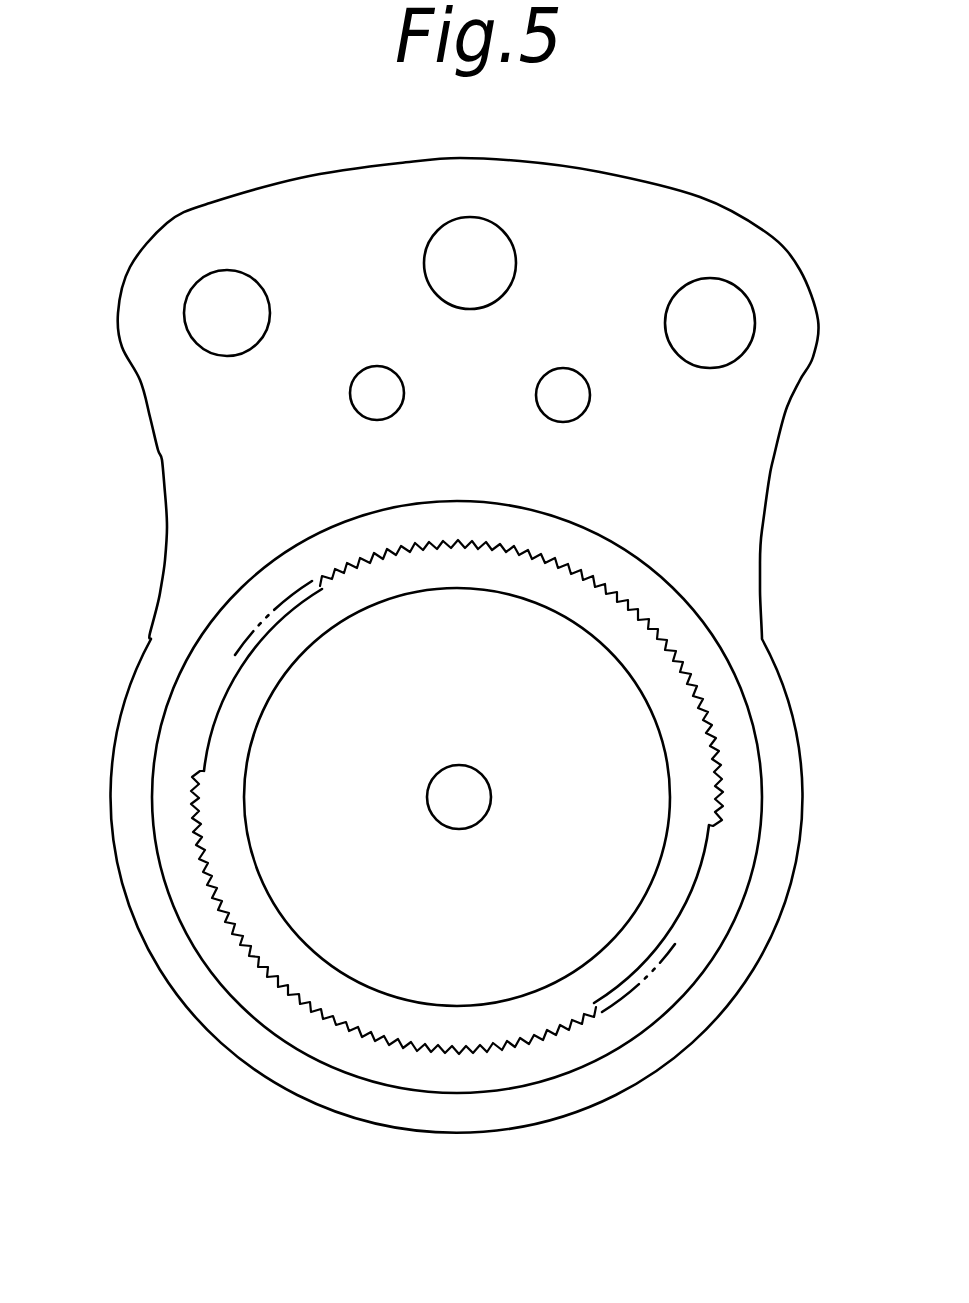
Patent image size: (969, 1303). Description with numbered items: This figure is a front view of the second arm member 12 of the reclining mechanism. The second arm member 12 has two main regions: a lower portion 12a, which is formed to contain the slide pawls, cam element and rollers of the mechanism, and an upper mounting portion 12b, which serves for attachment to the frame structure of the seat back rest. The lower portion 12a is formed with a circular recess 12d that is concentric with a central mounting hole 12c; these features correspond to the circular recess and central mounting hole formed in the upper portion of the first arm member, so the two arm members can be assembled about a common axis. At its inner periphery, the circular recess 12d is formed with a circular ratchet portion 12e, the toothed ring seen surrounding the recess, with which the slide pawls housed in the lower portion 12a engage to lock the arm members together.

The second arm member 12 is at (168, 225).
The lower portion 12a is at (172, 960).
The upper mounting portion 12b is at (173, 440).
The central mounting hole 12c is at (491, 798).
The circular recess 12d is at (490, 695).
The circular ratchet portion 12e is at (692, 682).